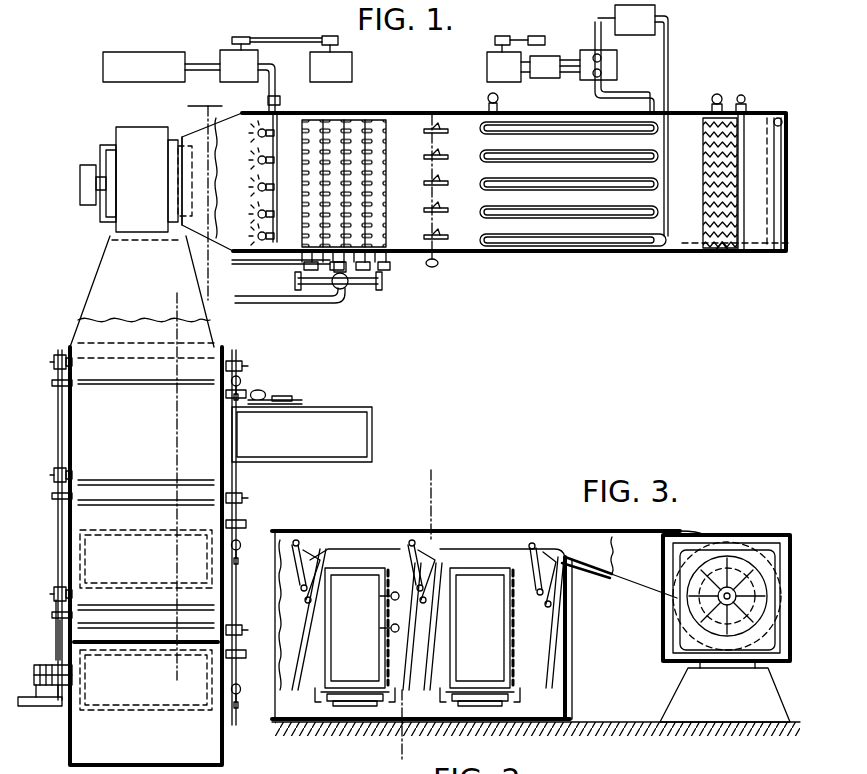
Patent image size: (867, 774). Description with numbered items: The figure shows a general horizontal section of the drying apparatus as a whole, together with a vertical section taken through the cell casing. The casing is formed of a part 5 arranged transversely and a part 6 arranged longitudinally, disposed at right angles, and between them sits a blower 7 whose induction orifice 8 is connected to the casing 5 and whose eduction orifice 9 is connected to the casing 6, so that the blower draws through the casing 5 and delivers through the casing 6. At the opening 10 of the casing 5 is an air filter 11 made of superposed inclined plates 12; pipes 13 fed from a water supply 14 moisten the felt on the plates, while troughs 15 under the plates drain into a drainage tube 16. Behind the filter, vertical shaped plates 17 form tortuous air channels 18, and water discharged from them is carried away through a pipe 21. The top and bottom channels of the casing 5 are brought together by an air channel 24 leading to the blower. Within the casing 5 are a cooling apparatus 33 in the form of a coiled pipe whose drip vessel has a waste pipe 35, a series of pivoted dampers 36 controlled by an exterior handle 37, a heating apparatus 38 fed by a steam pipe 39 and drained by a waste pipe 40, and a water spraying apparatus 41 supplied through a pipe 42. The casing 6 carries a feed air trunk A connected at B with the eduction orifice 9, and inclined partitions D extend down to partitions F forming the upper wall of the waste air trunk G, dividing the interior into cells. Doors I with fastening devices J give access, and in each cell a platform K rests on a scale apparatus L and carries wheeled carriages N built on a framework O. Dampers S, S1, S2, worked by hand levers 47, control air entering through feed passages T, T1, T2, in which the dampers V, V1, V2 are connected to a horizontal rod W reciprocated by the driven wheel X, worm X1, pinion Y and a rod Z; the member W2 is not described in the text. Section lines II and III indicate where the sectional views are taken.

In FIG. 1, the casing 5 is at (570, 253).
In FIG. 1, the casing 6 is at (70, 436).
In FIG. 1, the blower 7 is at (130, 183).
In FIG. 3, the blower 7 is at (735, 565).
In FIG. 1, the induction orifice 8 is at (181, 181).
In FIG. 3, the induction orifice 8 is at (704, 604).
In FIG. 1, the eduction orifice 9 is at (142, 291).
In FIG. 3, the eduction orifice 9 is at (672, 582).
In FIG. 1, the opening 10 is at (790, 184).
In FIG. 3, the opening 10 is at (708, 768).
In FIG. 1, the air filter 11 is at (748, 166).
In FIG. 1, the inclined plates 12 is at (758, 254).
In FIG. 3, the inclined plates 12 is at (771, 767).
In FIG. 1, the pipes 13 is at (722, 252).
In FIG. 1, the water supply 14 is at (744, 96).
In FIG. 1, the troughs 15 is at (781, 254).
In FIG. 1, the drainage tube 16 is at (779, 117).
In FIG. 1, the shaped plates 17 is at (708, 225).
In FIG. 1, the tortuous air channels 18 is at (704, 190).
In FIG. 1, the pipe 21 is at (712, 99).
In FIG. 1, the air channel 24 is at (235, 198).
In FIG. 1, the cooling apparatus 33 is at (625, 246).
In FIG. 1, the waste pipe 35 is at (488, 99).
In FIG. 1, the pivoted dampers 36 is at (445, 157).
In FIG. 1, the handle 37 is at (438, 265).
In FIG. 1, the heating apparatus 38 is at (355, 187).
In FIG. 1, the pipe 39 is at (284, 265).
In FIG. 1, the waste pipe 40 is at (280, 302).
In FIG. 1, the water spraying apparatus 41 is at (262, 165).
In FIG. 1, the pipe 42 is at (280, 100).
In FIG. 1, the levers 47 is at (243, 368).
In FIG. 1, the damper S is at (130, 376).
In FIG. 3, the damper S is at (534, 544).
In FIG. 1, the feed air trunk A is at (128, 456).
In FIG. 3, the feed air trunk A is at (536, 632).
In FIG. 1, the framework O is at (130, 588).
In FIG. 3, the framework O is at (338, 615).
In FIG. 1, the wheeled carriages N is at (317, 435).
In FIG. 3, the wheeled carriages N is at (416, 676).
In FIG. 1, the horizontal rod W is at (58, 555).
In FIG. 1, the rod clamp W2 is at (58, 354).
In FIG. 1, the driven wheel X is at (32, 706).
In FIG. 1, the worm X1 is at (40, 666).
In FIG. 1, the rod Z is at (52, 638).
In FIG. 1, the fastening devices J is at (270, 393).
In FIG. 1, the doors I is at (296, 400).
In FIG. 1, the damper V2 is at (244, 582).
In FIG. 1, the section line II is at (83, 514).
In FIG. 3, the section line II is at (442, 484).
In FIG. 1, the section line III is at (192, 703).
In FIG. 1, the damper S1 is at (124, 498).
In FIG. 3, the damper S1 is at (412, 538).
In FIG. 1, the damper S2 is at (116, 624).
In FIG. 3, the damper S2 is at (296, 538).
In FIG. 3, the feed passage T is at (556, 560).
In FIG. 3, the feed passage T1 is at (436, 555).
In FIG. 3, the feed passage T2 is at (320, 555).
In FIG. 3, the connection B is at (601, 557).
In FIG. 3, the damper V is at (572, 585).
In FIG. 3, the pinion Y is at (572, 633).
In FIG. 3, the inclined partitions D is at (296, 650).
In FIG. 3, the damper V1 is at (400, 596).
In FIG. 3, the platform K is at (318, 694).
In FIG. 3, the scale apparatus L is at (406, 705).
In FIG. 3, the partitions F is at (405, 694).
In FIG. 3, the waste air trunk G is at (366, 712).